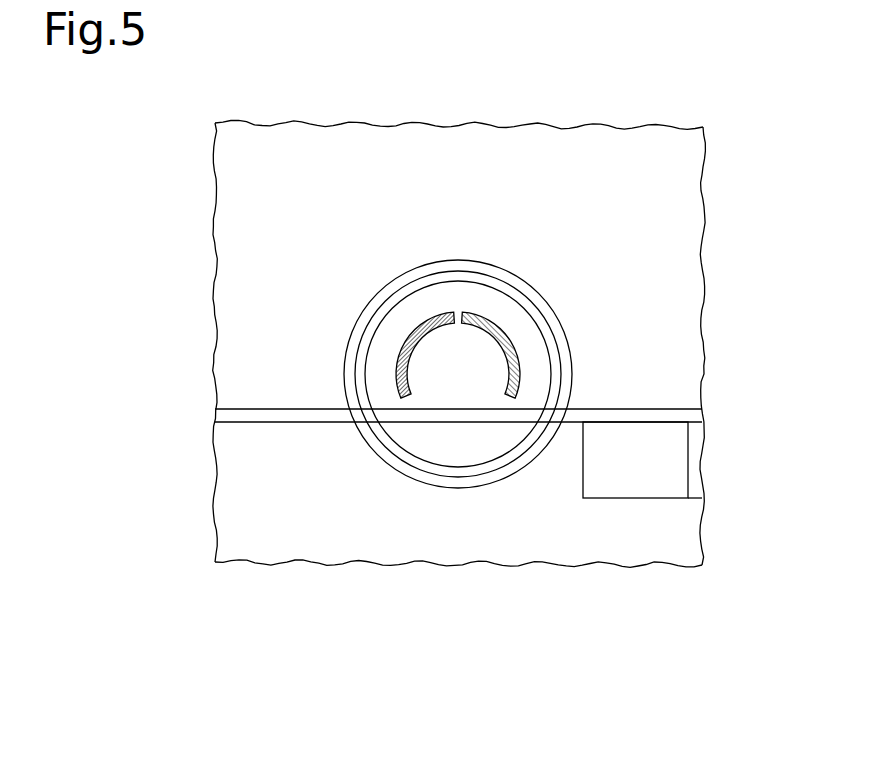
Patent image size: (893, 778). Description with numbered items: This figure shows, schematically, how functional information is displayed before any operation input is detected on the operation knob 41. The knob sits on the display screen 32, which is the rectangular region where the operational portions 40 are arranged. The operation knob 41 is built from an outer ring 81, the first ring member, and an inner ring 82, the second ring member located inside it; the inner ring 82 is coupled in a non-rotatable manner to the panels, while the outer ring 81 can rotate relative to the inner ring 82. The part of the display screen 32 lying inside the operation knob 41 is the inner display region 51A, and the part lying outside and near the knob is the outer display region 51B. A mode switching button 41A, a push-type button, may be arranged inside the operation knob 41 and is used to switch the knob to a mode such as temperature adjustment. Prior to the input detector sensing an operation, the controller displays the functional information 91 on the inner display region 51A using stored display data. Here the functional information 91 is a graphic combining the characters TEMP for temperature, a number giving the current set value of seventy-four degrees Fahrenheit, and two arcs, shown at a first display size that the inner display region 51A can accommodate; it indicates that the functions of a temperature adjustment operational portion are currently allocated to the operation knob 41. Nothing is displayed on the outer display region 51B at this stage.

The display screen 32 is at (680, 208).
The operational portions 40 is at (325, 499).
The operation knob 41 is at (363, 433).
The mode switching button 41A is at (455, 450).
The inner display region 51A is at (542, 371).
The outer display region 51B is at (483, 248).
The outer ring 81 is at (543, 283).
The inner ring 82 is at (552, 323).
The functional information 91 is at (398, 337).